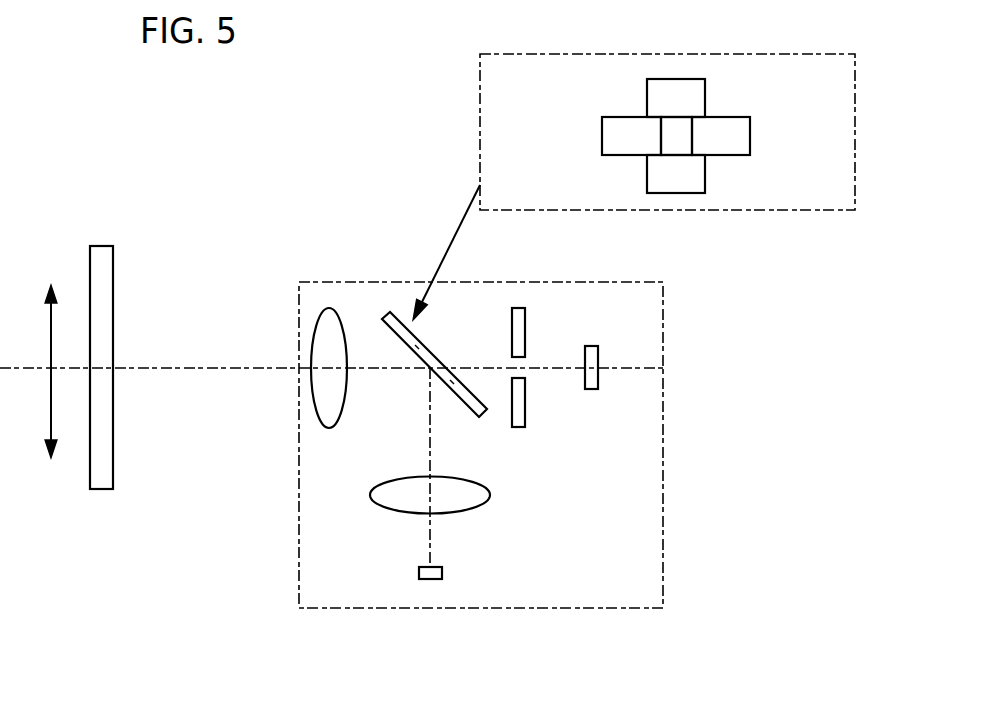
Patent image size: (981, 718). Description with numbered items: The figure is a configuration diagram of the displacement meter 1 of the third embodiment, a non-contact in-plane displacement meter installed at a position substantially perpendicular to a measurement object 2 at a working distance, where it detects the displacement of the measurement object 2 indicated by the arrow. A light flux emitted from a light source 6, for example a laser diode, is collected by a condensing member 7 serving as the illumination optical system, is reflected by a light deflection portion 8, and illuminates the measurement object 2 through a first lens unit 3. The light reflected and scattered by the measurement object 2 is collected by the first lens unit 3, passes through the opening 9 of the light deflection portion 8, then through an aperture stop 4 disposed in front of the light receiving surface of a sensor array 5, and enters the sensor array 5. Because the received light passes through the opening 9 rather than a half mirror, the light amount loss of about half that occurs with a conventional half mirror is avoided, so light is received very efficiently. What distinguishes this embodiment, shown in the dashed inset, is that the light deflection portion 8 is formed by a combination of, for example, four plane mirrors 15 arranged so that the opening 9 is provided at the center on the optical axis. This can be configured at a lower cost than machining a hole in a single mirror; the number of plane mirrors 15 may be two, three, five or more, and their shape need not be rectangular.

The displacement meter 1 is at (663, 448).
The measurement object 2 is at (90, 266).
The first lens unit 3 is at (339, 308).
The aperture stop 4 is at (525, 316).
The sensor array 5 is at (592, 347).
The light source 6 is at (442, 572).
The condensing member 7 is at (489, 497).
The light deflection portion 8 is at (402, 319).
The opening 9 is at (678, 133).
The plane mirrors 15 is at (660, 100).